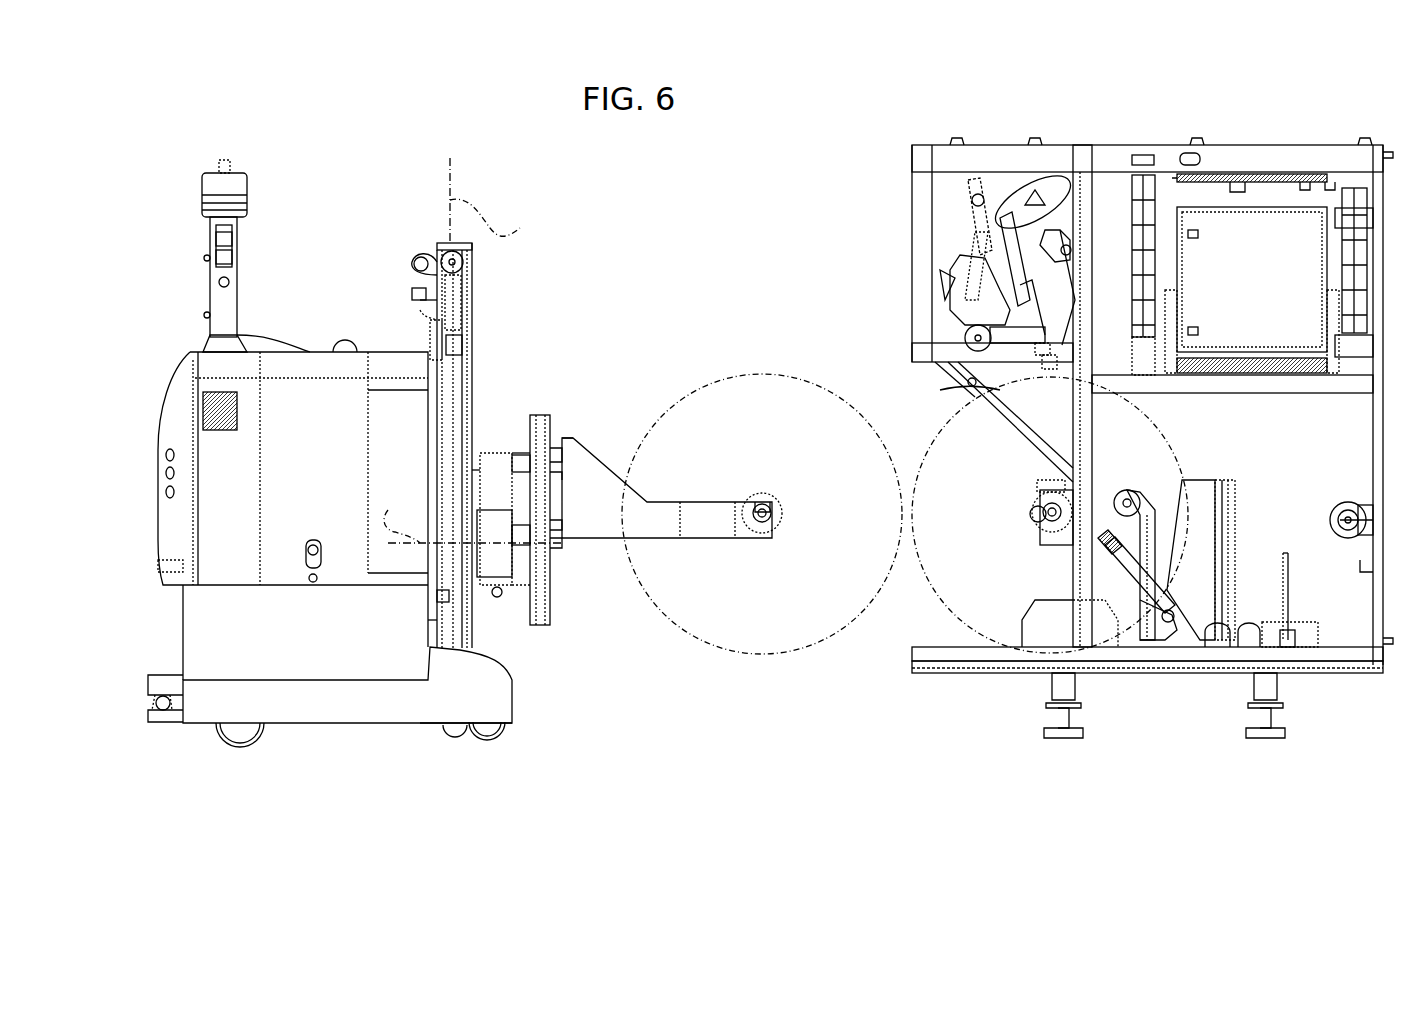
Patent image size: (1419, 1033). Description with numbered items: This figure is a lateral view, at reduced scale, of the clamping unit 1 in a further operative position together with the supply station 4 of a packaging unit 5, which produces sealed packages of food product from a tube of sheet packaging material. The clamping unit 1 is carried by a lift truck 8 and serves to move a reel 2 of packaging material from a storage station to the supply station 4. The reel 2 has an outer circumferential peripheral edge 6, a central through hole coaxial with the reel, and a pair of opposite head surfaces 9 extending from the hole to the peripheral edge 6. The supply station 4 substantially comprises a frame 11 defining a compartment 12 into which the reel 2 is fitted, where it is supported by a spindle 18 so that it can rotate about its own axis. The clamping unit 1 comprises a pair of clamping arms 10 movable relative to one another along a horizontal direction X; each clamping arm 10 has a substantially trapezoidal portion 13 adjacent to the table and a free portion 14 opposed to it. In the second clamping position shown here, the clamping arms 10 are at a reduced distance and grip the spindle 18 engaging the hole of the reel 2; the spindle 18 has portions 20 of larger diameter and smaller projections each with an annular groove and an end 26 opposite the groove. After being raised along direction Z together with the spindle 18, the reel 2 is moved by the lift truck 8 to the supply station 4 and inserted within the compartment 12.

The clamping unit 1 is at (564, 388).
The reel 2 is at (740, 383).
The supply station 4 is at (892, 362).
The packaging unit 5 is at (1342, 464).
The outer circumferential peripheral edge 6 is at (684, 392).
The lift truck 8 is at (346, 312).
The head surfaces 9 is at (778, 622).
The clamping arms 10 is at (597, 548).
The frame 11 is at (1328, 488).
The compartment 12 is at (942, 377).
The trapezoidal portion 13 is at (588, 467).
The free portion 14 is at (705, 528).
The spindle 18 is at (762, 504).
The portions 20 is at (772, 508).
The end 26 is at (767, 514).